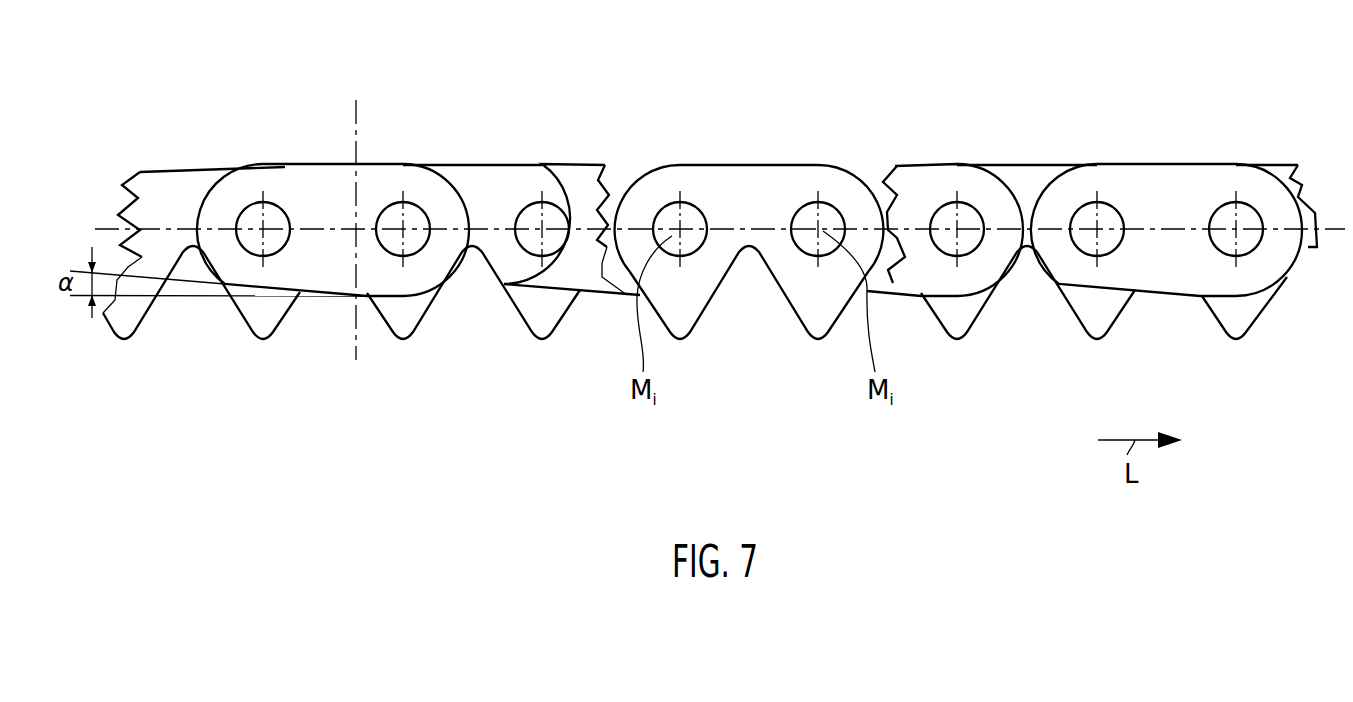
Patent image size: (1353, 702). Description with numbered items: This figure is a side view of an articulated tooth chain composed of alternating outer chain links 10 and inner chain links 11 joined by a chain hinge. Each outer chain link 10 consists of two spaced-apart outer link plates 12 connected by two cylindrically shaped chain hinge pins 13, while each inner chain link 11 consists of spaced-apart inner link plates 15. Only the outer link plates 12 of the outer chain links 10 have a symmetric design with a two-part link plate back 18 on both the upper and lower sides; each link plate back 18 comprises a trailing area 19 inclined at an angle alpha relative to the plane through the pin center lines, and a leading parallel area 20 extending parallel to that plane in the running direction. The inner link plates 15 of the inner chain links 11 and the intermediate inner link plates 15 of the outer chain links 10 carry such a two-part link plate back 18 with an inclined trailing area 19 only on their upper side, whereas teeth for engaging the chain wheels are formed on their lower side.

The outer chain link 10 is at (1173, 130).
The inner chain link 11 is at (702, 130).
The outer link plate 12 is at (433, 183).
The chain hinge pin 13 is at (410, 236).
The inner link plate 15 is at (767, 183).
The link plate back 18 is at (354, 160).
The trailing area 19 is at (305, 163).
The leading area 20 is at (397, 165).